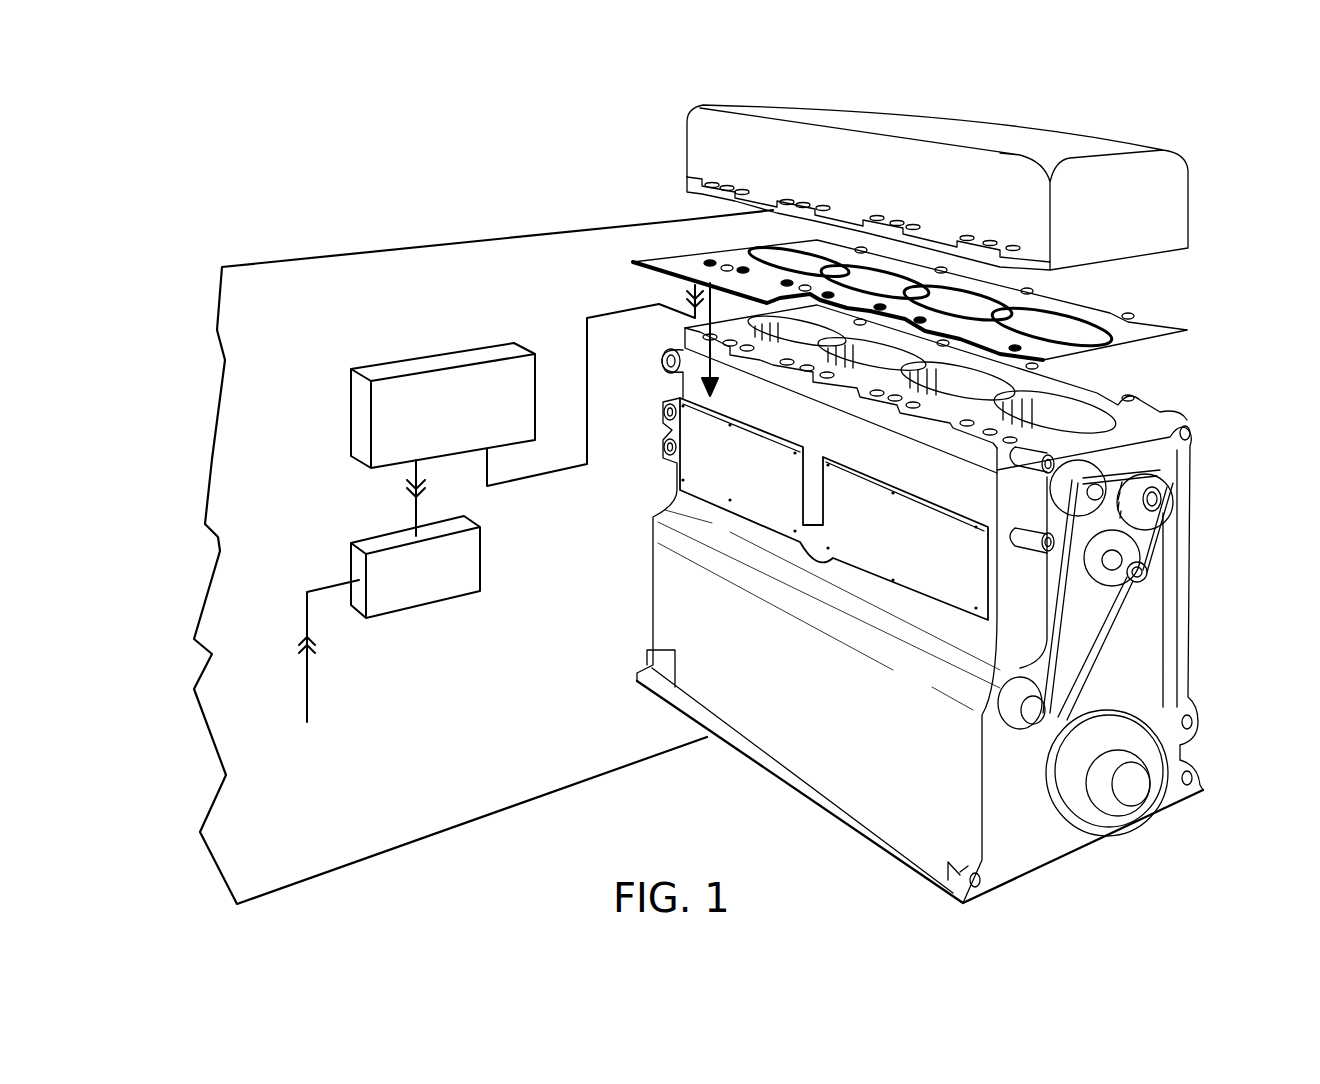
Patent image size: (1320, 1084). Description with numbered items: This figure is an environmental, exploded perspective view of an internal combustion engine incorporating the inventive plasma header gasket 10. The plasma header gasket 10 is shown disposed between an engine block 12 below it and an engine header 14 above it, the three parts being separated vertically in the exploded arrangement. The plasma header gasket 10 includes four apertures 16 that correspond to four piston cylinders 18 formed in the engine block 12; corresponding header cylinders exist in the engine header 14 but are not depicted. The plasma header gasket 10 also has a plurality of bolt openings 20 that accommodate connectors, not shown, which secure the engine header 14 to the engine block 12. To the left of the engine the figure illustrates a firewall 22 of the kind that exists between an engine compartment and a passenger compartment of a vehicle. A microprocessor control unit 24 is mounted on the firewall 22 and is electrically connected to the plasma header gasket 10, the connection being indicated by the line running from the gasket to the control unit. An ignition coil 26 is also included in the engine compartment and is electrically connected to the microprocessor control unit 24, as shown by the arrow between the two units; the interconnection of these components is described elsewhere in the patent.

The plasma header gasket 10 is at (1175, 333).
The engine block 12 is at (937, 604).
The engine header 14 is at (1123, 193).
The apertures 16 is at (1107, 310).
The piston cylinders 18 is at (1110, 397).
The bolt openings 20 is at (727, 268).
The firewall 22 is at (465, 731).
The microprocessor control unit 24 is at (428, 388).
The ignition coil 26 is at (376, 571).